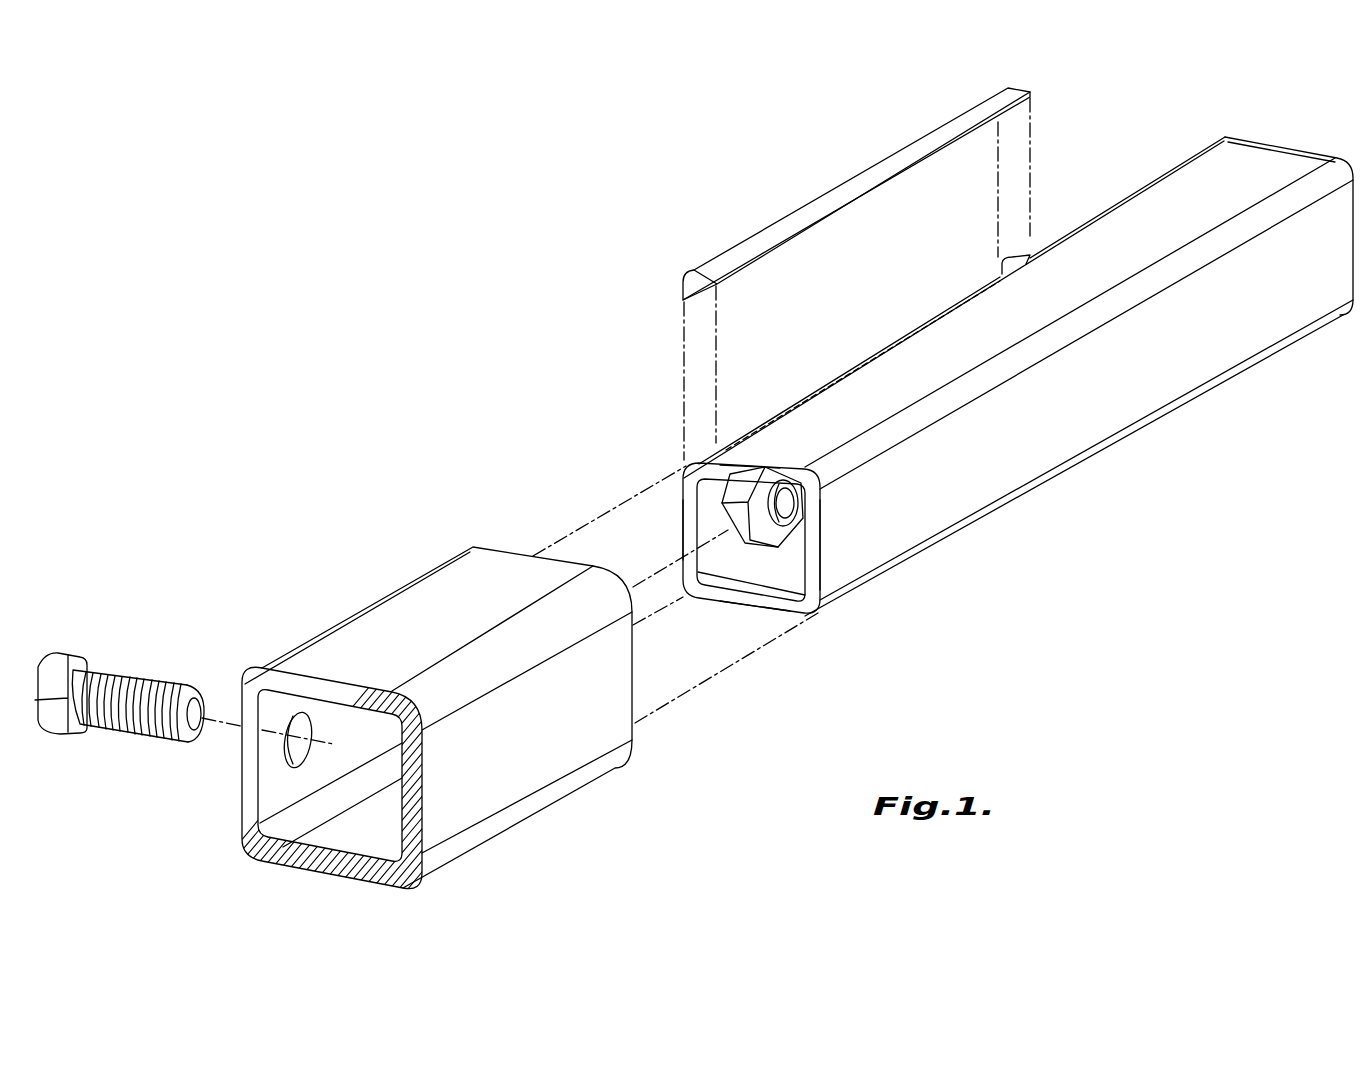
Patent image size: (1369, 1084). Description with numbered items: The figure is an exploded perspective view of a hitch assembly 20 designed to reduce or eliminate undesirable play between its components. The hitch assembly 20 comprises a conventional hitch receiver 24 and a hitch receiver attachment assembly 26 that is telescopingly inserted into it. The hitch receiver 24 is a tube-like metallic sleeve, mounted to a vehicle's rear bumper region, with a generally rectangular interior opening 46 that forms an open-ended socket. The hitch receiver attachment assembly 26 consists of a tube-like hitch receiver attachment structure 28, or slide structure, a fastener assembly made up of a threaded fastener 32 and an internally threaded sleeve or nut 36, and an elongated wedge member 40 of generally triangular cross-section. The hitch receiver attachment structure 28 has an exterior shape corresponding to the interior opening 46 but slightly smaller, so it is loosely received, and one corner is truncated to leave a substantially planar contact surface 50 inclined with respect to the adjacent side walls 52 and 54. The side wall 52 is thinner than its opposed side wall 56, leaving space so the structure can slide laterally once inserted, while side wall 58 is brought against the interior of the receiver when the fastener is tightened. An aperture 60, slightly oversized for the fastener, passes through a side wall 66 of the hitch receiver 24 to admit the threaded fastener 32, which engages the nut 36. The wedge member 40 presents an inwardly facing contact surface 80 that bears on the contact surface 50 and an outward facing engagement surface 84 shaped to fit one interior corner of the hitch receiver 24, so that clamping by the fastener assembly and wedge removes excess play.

The hitch assembly 20 is at (262, 408).
The hitch receiver 24 is at (387, 627).
The hitch receiver attachment assembly 26 is at (632, 347).
The hitch receiver attachment structure 28 is at (1124, 381).
The threaded fastener 32 is at (80, 662).
The internally threaded sleeve or nut 36 is at (727, 495).
The wedge member 40 is at (850, 172).
The interior opening 46 is at (327, 770).
The contact surface 50 is at (702, 452).
The side wall 52 is at (680, 523).
The side wall 54 is at (768, 470).
The side wall 56 is at (818, 548).
The side wall 58 is at (753, 598).
The aperture 60 is at (302, 750).
The side wall 66 is at (247, 817).
The contact surface 80 is at (733, 268).
The engagement surface 84 is at (755, 242).